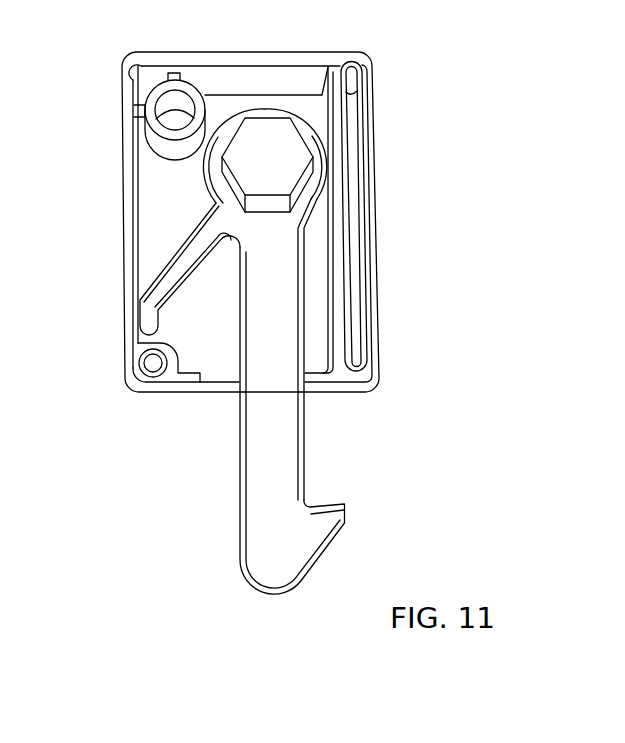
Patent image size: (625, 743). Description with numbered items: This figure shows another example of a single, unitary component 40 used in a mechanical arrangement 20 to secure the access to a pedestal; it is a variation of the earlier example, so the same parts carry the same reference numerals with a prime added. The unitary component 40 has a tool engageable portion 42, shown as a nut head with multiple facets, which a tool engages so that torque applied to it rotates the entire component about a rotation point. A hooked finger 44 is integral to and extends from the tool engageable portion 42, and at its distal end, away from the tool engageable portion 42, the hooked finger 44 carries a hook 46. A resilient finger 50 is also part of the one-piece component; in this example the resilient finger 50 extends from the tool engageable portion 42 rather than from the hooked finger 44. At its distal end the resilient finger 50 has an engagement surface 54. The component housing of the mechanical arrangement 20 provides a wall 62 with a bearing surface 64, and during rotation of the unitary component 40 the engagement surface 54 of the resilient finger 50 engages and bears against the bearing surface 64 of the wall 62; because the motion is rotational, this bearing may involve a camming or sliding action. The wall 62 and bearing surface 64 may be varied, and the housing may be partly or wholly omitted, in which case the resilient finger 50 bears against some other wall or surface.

The mechanical arrangement 20 is at (393, 100).
The wall 62 is at (127, 149).
The bearing surface 64 is at (140, 208).
The engagement surface 54 is at (378, 296).
The tool engageable portion 42 is at (268, 128).
The single, unitary component 40 is at (228, 351).
The resilient finger 50 is at (149, 305).
The hooked finger 44 is at (253, 537).
The hook 46 is at (330, 518).